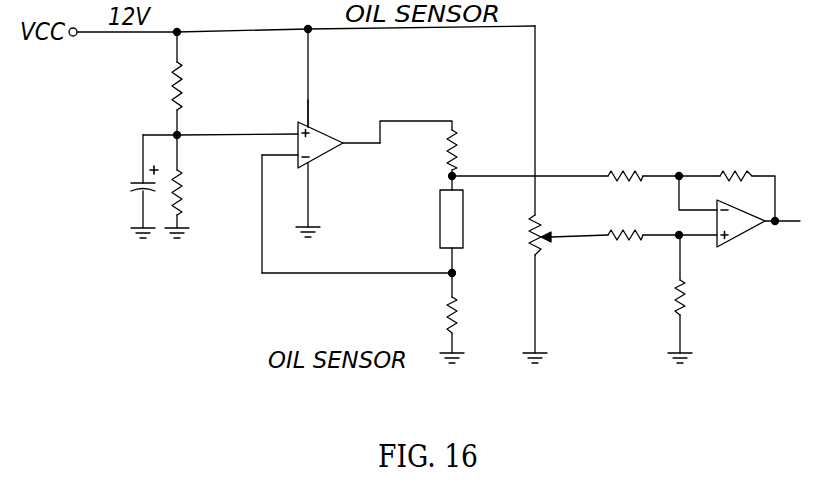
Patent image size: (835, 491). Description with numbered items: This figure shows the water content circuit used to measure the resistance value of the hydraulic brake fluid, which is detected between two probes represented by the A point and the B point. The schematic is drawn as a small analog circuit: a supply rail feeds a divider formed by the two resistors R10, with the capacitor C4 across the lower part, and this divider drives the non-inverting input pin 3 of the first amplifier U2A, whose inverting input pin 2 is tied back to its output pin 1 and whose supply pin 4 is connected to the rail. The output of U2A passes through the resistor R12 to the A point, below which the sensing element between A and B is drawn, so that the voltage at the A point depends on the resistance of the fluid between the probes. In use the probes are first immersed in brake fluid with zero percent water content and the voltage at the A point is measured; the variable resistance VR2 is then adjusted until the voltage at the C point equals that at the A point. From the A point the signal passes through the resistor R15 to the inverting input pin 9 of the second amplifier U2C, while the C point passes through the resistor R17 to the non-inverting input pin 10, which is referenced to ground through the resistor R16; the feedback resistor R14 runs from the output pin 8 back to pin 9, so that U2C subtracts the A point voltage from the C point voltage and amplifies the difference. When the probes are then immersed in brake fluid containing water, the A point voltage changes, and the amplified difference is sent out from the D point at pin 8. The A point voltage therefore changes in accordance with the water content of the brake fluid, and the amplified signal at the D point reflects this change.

The resistor R10 (11K and 1K) R10 is at (196, 135).
The capacitor C4 10uF C4 is at (125, 186).
The operational amplifier U2A LM124 U2A is at (282, 133).
The U2A output pin 1 is at (361, 135).
The U2A inverting input pin 2 is at (280, 147).
The U2A non-inverting input pin 3 is at (237, 123).
The U2A supply pin 4 is at (317, 111).
The resistor R12 100K R12 is at (430, 150).
The A point A is at (529, 163).
The B point B is at (462, 269).
The C point C is at (572, 260).
The D point D is at (815, 226).
The variable resistance VR2 is at (550, 194).
The resistor R15 100K R15 is at (641, 154).
The resistor R17 100K R17 is at (641, 233).
The feedback resistor R14 100K R14 is at (726, 174).
The resistor R16 100K R16 is at (657, 298).
The operational amplifier U2C LM124 U2C is at (739, 240).
The U2C output pin 8 is at (782, 207).
The U2C inverting input pin 9 is at (698, 195).
The U2C non-inverting input pin 10 is at (698, 227).